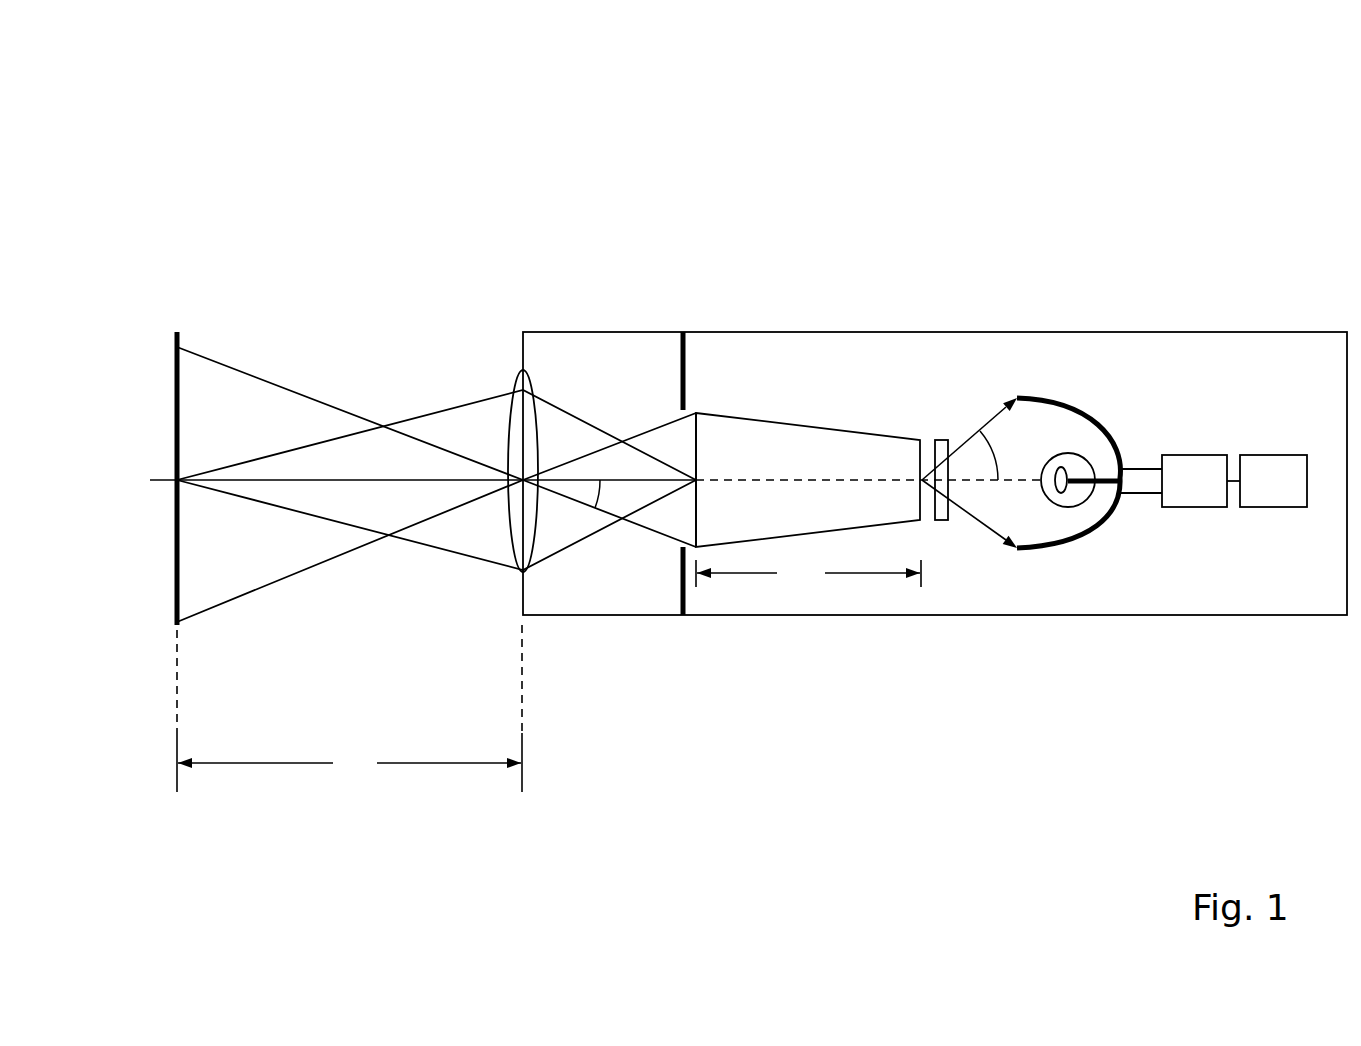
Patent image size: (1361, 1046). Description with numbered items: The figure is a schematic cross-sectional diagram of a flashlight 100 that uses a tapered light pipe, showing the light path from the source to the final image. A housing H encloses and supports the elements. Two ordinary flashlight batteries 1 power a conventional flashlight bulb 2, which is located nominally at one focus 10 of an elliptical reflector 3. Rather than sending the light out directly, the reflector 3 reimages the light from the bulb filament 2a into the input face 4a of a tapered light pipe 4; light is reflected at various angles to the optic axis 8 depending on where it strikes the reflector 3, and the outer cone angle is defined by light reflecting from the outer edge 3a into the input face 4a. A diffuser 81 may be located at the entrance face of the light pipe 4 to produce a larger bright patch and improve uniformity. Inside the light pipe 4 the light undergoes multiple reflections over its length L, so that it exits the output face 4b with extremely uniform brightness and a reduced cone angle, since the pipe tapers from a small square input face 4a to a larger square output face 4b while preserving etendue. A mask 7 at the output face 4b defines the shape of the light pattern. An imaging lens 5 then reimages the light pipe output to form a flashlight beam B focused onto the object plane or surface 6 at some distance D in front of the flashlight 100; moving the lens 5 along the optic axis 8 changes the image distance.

The flashlight 100 is at (358, 172).
The flashlight batteries 1 is at (1204, 497).
The flashlight bulb 2 is at (1070, 452).
The bulb filament 2a is at (1088, 490).
The elliptical reflector 3 is at (1043, 395).
The outer edge of reflector 3a is at (1020, 545).
The tapered light pipe 4 is at (876, 406).
The input face 4a is at (937, 517).
The output face 4b is at (694, 437).
The imaging lens 5 is at (520, 410).
The object plane 6 is at (177, 352).
The mask 7 is at (684, 382).
The optic axis 8 is at (350, 480).
The diffuser 81 is at (937, 517).
The focus of elliptical reflector 10 is at (1075, 507).
The housing H is at (1146, 332).
The flashlight beam B is at (374, 345).
The distance D is at (349, 708).
The length of light pipe L is at (808, 578).